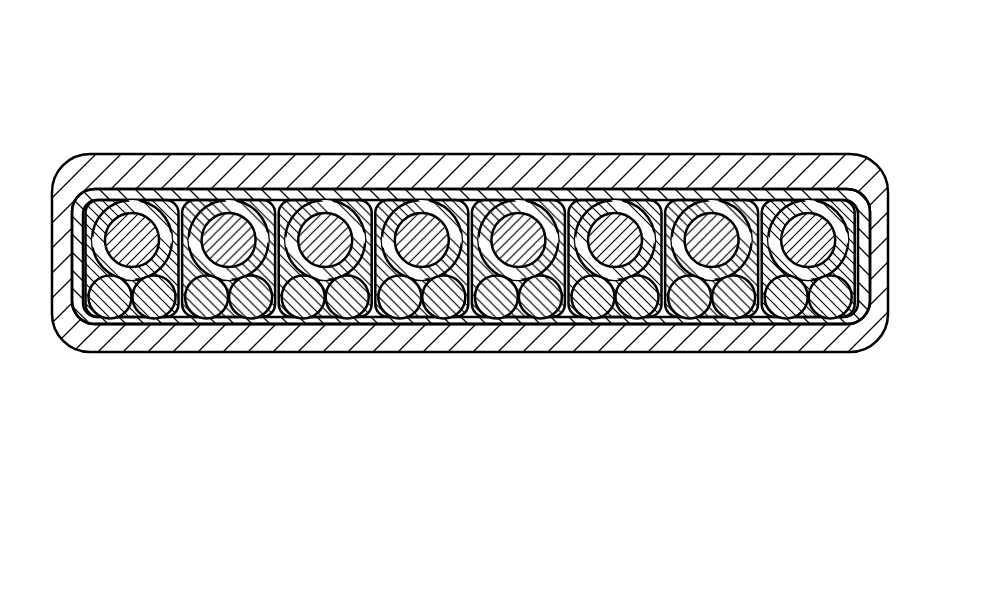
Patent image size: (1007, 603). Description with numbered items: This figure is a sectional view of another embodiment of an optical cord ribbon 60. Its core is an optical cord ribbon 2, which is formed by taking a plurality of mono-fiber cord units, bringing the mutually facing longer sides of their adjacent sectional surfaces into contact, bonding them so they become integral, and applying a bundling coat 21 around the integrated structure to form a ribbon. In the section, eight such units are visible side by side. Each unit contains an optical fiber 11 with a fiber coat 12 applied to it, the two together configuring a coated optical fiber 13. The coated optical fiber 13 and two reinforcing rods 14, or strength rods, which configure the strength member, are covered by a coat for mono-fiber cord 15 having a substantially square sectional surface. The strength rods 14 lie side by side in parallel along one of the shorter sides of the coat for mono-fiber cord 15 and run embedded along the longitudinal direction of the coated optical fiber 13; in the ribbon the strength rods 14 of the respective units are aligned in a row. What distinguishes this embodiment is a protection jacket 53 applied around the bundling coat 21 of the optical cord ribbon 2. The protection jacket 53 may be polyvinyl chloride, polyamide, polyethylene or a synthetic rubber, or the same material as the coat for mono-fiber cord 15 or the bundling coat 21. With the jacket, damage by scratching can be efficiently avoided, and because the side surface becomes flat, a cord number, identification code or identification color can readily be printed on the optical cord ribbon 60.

The optical cord ribbon 60 is at (470, 128).
The optical cord ribbon 2 is at (547, 186).
The bundling coat 21 is at (637, 197).
The protection jacket 53 is at (495, 340).
The coated optical fiber 13 is at (796, 222).
The optical fiber 11 is at (803, 222).
The fiber coat 12 is at (793, 206).
The coat for mono-fiber cord 15 is at (838, 203).
The reinforcing rod 14 is at (772, 320).